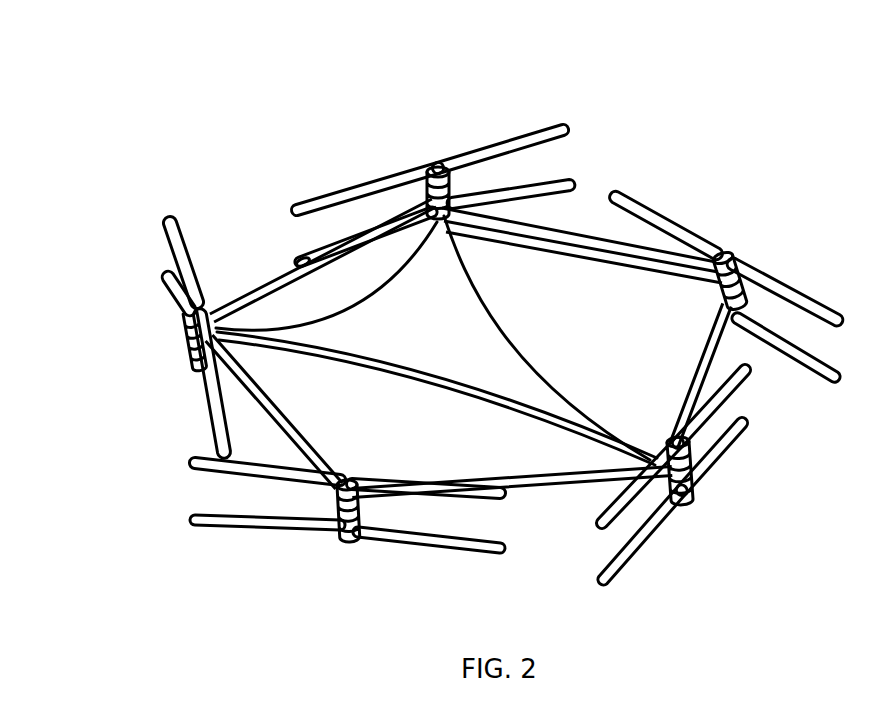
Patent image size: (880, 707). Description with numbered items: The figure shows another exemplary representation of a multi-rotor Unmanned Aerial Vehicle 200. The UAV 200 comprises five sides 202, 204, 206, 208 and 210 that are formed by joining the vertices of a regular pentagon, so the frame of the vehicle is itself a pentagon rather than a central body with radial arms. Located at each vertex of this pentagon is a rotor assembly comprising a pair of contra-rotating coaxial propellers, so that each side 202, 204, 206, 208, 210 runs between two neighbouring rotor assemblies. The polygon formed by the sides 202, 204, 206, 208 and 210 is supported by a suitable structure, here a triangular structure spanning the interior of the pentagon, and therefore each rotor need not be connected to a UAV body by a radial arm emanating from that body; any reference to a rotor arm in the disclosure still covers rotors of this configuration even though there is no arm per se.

The multi-rotor Unmanned Aerial Vehicle 200 is at (113, 55).
The side 202 is at (283, 405).
The side 204 is at (547, 507).
The side 206 is at (686, 358).
The side 208 is at (588, 226).
The side 210 is at (252, 283).